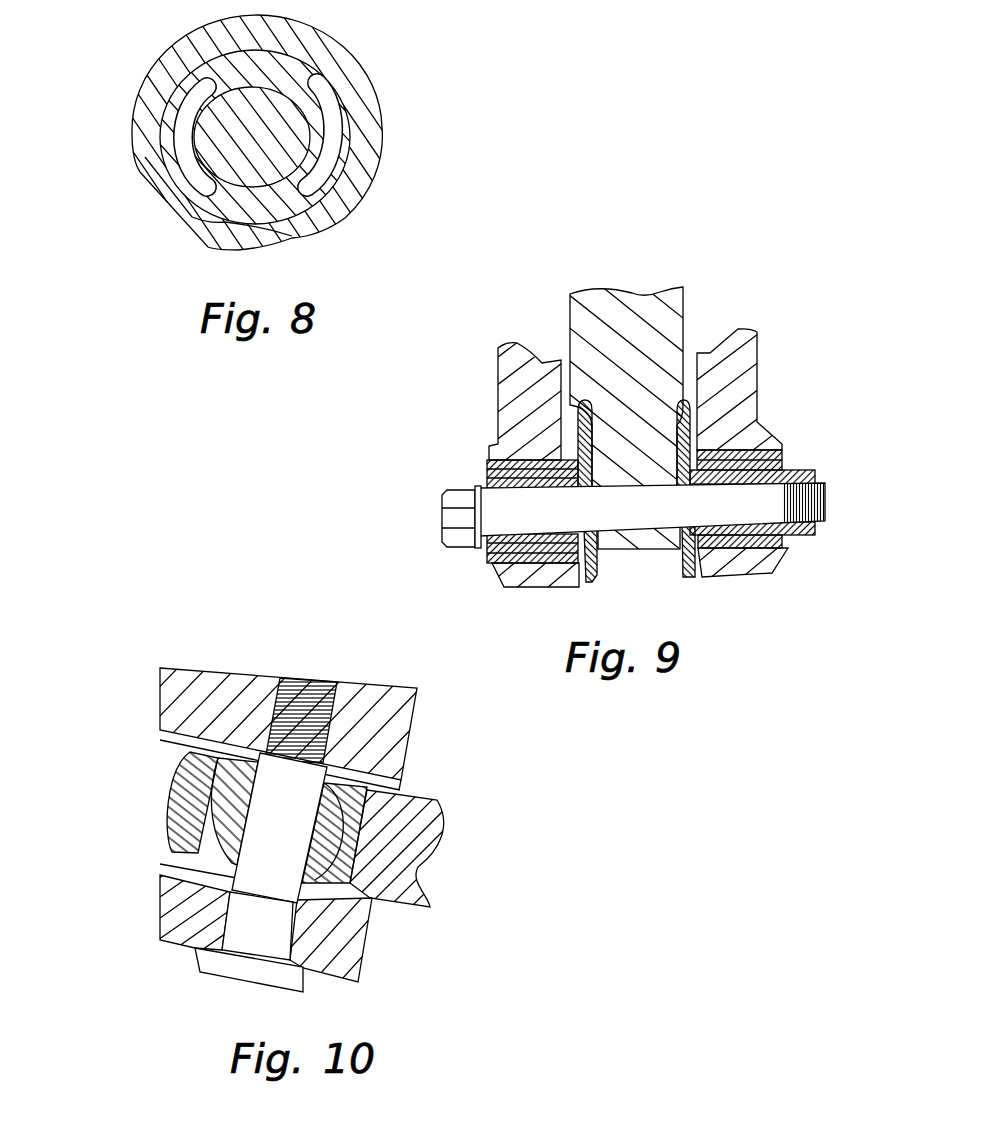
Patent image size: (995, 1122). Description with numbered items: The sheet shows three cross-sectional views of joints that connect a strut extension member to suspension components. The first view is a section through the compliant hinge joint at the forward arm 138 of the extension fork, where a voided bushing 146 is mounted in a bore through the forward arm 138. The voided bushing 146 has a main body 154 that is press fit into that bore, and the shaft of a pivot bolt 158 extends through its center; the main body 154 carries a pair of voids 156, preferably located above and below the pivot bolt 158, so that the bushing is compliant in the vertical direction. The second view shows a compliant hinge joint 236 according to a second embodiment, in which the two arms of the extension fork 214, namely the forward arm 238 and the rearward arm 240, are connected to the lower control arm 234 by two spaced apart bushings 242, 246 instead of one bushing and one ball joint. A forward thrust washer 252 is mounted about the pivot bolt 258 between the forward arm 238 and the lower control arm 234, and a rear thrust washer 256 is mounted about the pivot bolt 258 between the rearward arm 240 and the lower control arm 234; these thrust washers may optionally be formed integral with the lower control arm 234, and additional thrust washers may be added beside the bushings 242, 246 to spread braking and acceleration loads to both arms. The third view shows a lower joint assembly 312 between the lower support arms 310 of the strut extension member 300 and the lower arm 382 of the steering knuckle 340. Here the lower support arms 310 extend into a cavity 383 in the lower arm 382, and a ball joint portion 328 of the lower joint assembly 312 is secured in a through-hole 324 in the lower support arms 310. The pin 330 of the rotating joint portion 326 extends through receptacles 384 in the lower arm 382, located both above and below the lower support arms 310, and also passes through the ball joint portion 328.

In FIG. 8, the forward arm 138 is at (367, 111).
In FIG. 8, the voided bushing 146 is at (303, 63).
In FIG. 8, the main body 154 is at (192, 220).
In FIG. 8, the voids 156 is at (160, 133).
In FIG. 8, the pivot bolt 158 is at (312, 240).
In FIG. 9, the extension fork 214 is at (757, 342).
In FIG. 9, the lower control arm 234 is at (650, 292).
In FIG. 9, the compliant hinge joint 236 is at (712, 621).
In FIG. 9, the forward arm 238 is at (740, 577).
In FIG. 9, the rearward arm 240 is at (527, 587).
In FIG. 9, the bushing 242 is at (484, 562).
In FIG. 9, the bushing 246 is at (803, 542).
In FIG. 9, the forward thrust washer 252 is at (684, 425).
In FIG. 9, the rear thrust washer 256 is at (580, 414).
In FIG. 9, the pivot bolt 258 is at (660, 552).
In FIG. 10, the strut extension member 300 is at (441, 872).
In FIG. 10, the lower support arms 310 is at (168, 825).
In FIG. 10, the lower joint assembly 312 is at (412, 771).
In FIG. 10, the through-hole 324 is at (165, 738).
In FIG. 10, the rotating joint portion 326 is at (340, 840).
In FIG. 10, the ball joint portion 328 is at (372, 893).
In FIG. 10, the pin 330 is at (160, 915).
In FIG. 10, the steering knuckle 340 is at (158, 700).
In FIG. 10, the lower arm 382 is at (372, 955).
In FIG. 10, the cavity 383 is at (170, 863).
In FIG. 10, the receptacles 384 is at (302, 678).